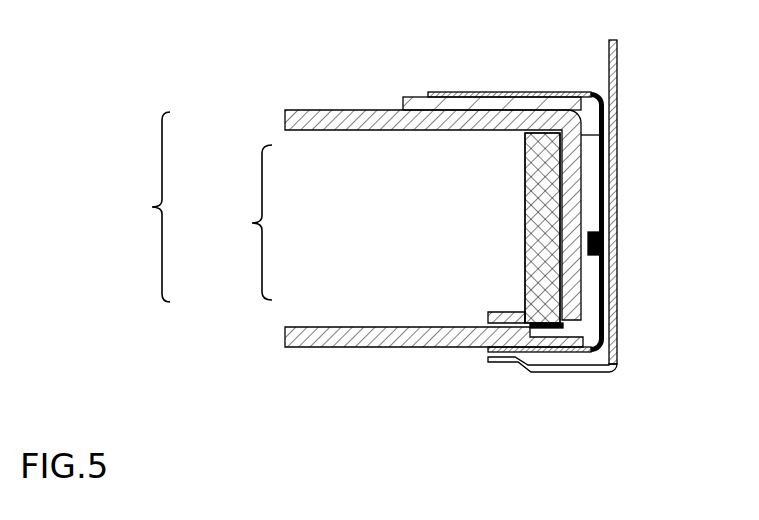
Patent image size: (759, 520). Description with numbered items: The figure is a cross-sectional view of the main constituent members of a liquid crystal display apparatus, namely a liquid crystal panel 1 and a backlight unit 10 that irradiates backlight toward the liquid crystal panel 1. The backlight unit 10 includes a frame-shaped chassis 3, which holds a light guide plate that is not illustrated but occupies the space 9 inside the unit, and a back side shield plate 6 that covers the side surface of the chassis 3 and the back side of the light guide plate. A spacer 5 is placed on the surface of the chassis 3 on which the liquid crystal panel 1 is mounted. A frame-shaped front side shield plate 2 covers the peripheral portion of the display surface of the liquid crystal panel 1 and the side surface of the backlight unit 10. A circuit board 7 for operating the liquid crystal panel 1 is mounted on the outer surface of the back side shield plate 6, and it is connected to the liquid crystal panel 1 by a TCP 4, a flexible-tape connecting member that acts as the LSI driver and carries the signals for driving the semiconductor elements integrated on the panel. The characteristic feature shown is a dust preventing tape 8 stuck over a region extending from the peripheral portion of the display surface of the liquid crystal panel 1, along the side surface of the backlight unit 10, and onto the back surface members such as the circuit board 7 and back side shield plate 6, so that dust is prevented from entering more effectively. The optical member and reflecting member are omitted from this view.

The liquid crystal panel 1 is at (352, 342).
The front side shield plate 2 is at (618, 97).
The chassis 3 is at (552, 186).
The TCP 4 is at (600, 245).
The spacer 5 is at (563, 324).
The back side shield plate 6 is at (315, 110).
The circuit board 7 is at (414, 97).
The dust preventing tape 8 is at (558, 92).
The space for light guide plate 9 is at (248, 222).
The backlight unit 10 is at (139, 207).